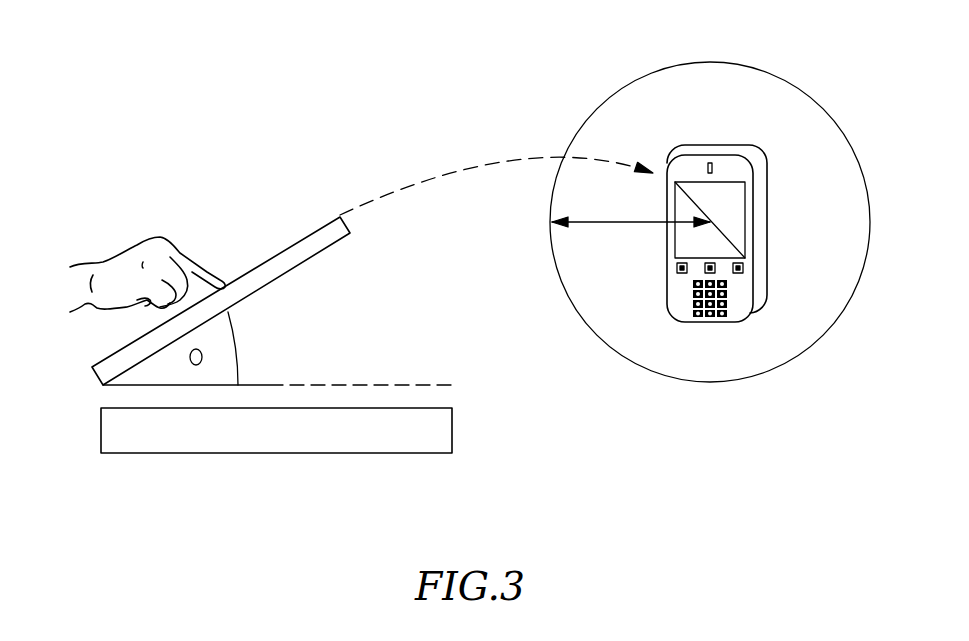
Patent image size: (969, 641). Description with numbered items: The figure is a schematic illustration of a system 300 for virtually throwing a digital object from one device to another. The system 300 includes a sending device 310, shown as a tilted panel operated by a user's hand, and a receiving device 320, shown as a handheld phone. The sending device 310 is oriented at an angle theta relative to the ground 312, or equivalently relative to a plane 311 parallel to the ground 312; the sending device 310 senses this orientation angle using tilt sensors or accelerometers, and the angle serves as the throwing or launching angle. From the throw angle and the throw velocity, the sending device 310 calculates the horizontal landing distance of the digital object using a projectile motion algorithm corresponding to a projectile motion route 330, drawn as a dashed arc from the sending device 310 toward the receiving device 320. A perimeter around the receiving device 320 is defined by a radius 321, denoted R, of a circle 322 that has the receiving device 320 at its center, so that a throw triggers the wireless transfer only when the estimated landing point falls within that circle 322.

The system 300 is at (225, 73).
The sending device 310 is at (292, 242).
The plane parallel to the ground 311 is at (253, 385).
The ground 312 is at (100, 432).
The receiving device 320 is at (728, 150).
The radius 321 is at (624, 225).
The circle 322 is at (631, 313).
The projectile motion route 330 is at (463, 168).